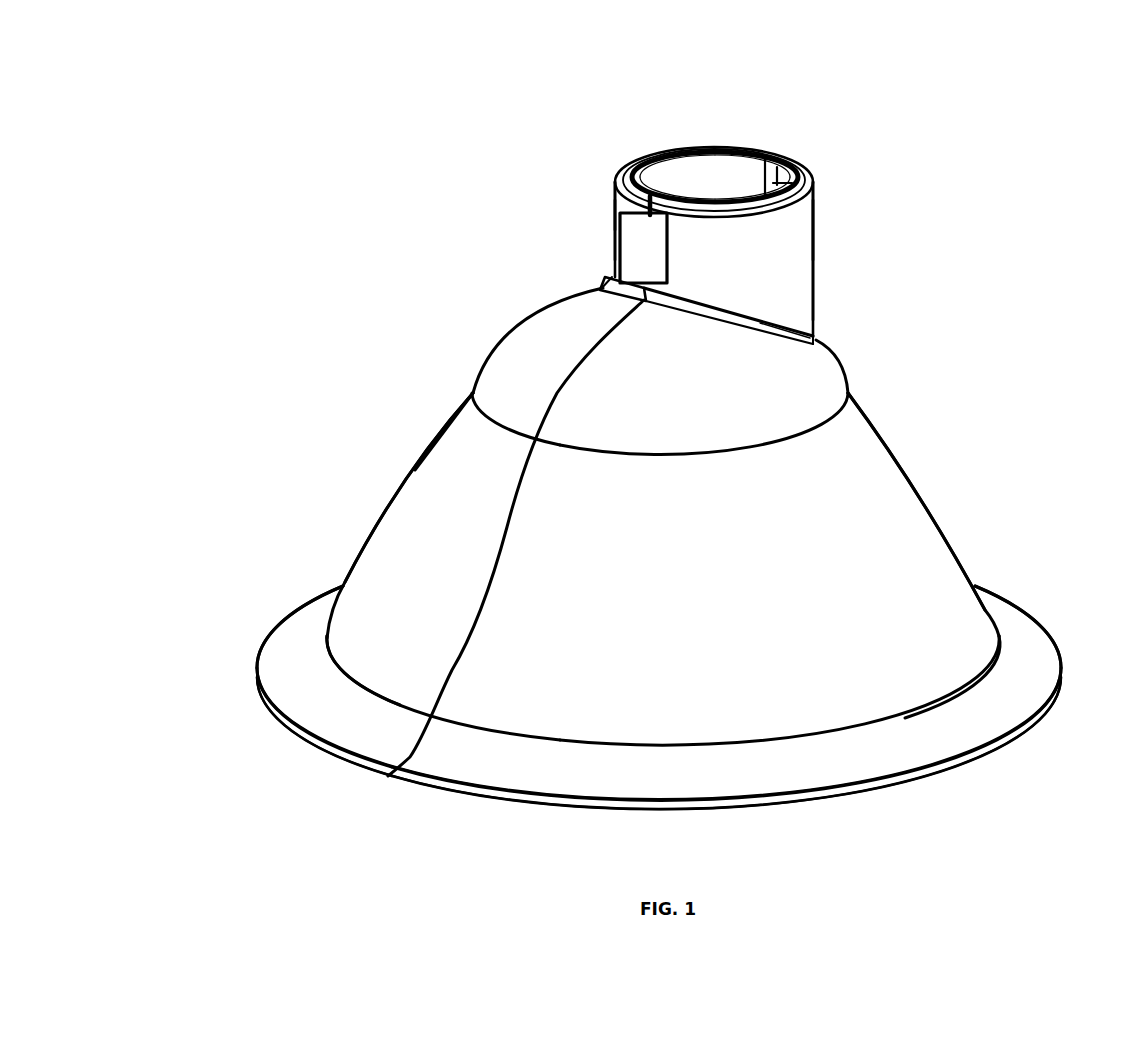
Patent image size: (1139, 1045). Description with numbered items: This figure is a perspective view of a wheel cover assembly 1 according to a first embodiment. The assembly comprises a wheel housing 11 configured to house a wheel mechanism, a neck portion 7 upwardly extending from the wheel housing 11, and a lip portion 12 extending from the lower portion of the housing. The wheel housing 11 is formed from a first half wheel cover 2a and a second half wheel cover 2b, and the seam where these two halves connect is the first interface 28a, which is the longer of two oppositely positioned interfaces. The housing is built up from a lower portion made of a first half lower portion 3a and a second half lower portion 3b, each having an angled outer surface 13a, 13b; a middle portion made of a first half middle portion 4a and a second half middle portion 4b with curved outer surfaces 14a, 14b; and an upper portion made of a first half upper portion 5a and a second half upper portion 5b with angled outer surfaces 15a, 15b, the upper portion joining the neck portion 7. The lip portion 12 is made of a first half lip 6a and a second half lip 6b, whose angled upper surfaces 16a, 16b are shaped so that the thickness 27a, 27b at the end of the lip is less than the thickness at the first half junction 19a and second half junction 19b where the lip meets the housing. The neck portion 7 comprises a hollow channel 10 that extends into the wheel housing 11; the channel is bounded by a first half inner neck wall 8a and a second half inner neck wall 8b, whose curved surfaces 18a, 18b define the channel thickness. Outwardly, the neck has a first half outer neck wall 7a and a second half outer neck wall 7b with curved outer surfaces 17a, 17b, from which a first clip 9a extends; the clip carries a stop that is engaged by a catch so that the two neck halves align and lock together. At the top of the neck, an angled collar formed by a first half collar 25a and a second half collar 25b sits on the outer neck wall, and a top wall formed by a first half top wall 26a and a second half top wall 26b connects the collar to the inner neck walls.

The wheel cover assembly 1 is at (272, 337).
The first half wheel cover 2a is at (412, 469).
The second half wheel cover 2b is at (923, 496).
The first half lower portion 3a is at (388, 553).
The second half lower portion 3b is at (913, 560).
The first half middle portion 4a is at (522, 355).
The second half middle portion 4b is at (778, 397).
The first half upper portion 5a is at (612, 272).
The second half upper portion 5b is at (815, 341).
The first half lip 6a is at (287, 680).
The second half lip 6b is at (1028, 657).
The neck portion 7 is at (691, 206).
The first half outer neck wall 7a is at (613, 208).
The second half outer neck wall 7b is at (787, 253).
The first half inner neck wall 8a is at (712, 175).
The second half inner neck wall 8b is at (777, 163).
The first clip 9a is at (636, 248).
The hollow channel 10 is at (734, 170).
The wheel housing 11 is at (449, 407).
The lip portion 12 is at (447, 802).
The angled outer surface 13a is at (427, 603).
The angled outer surface 13b is at (614, 622).
The curved outer surface 14a is at (535, 396).
The curved outer surface 14b is at (640, 407).
The angled outer surface 15a is at (615, 295).
The angled outer surface 15b is at (655, 306).
The angled upper surface 16a is at (344, 721).
The angled upper surface 16b is at (530, 770).
The curved outer surface 17a is at (613, 222).
The curved outer surface 17b is at (750, 273).
The curved surface 18a is at (694, 190).
The curved surface 18b is at (796, 193).
The first half junction 19a is at (318, 646).
The second half junction 19b is at (905, 718).
The first half collar 25a is at (617, 184).
The second half collar 25b is at (784, 206).
The first half top wall 26a is at (637, 178).
The second half top wall 26b is at (776, 185).
The thickness 27a is at (355, 758).
The thickness 27b is at (720, 806).
The first interface 28a is at (507, 527).